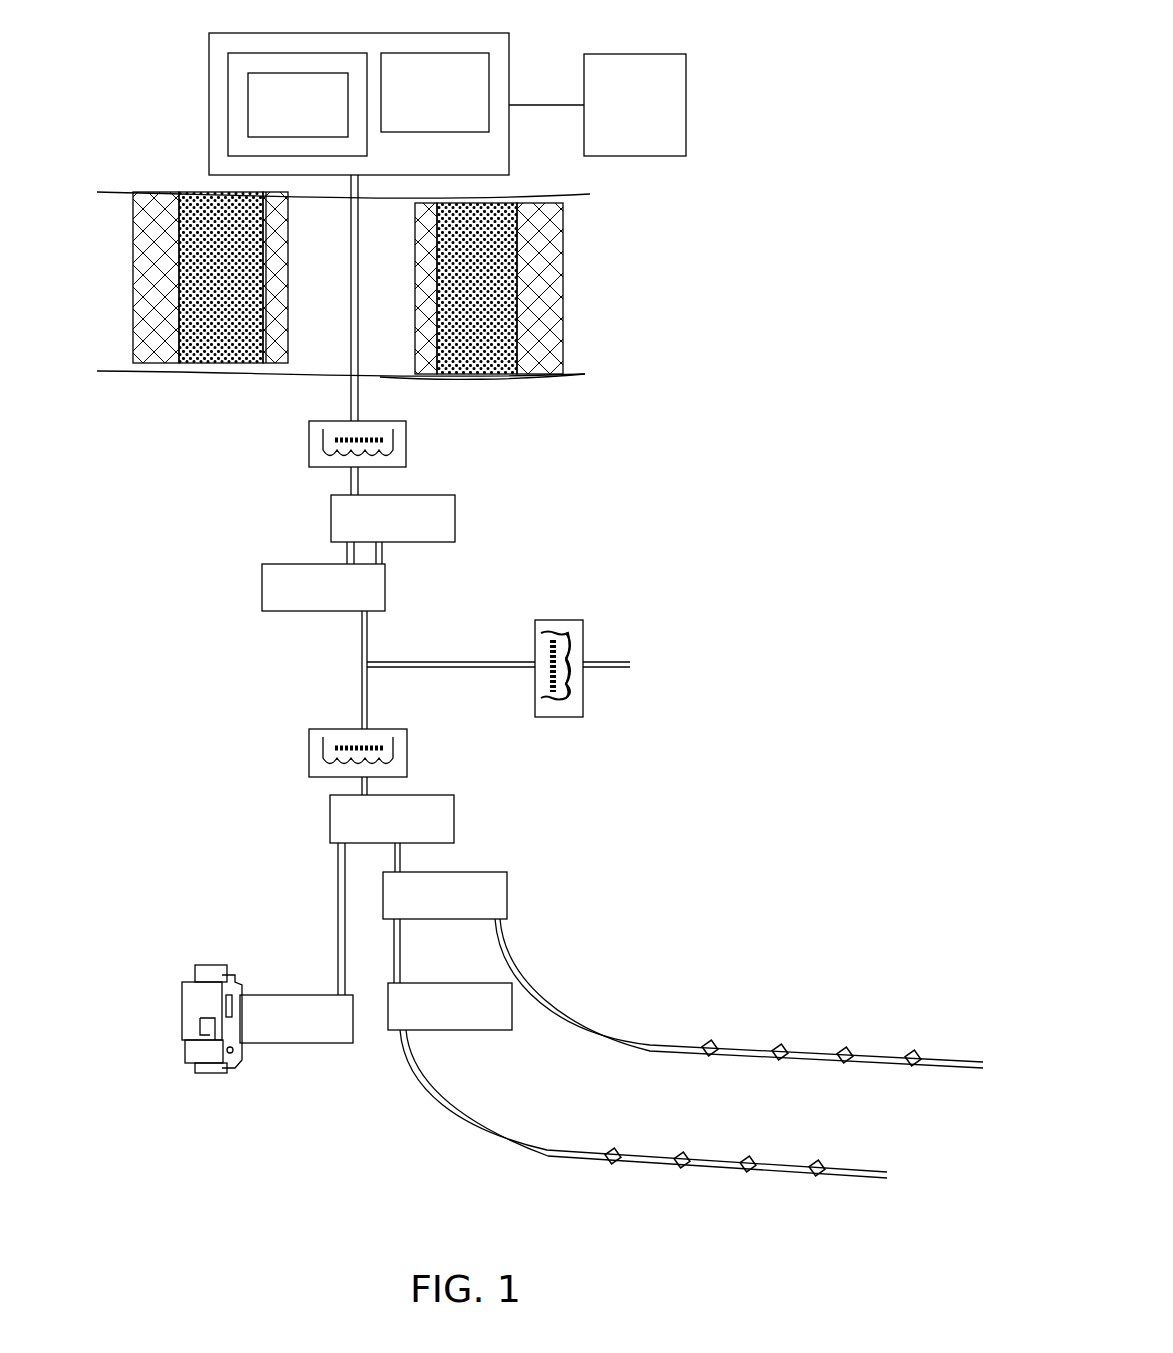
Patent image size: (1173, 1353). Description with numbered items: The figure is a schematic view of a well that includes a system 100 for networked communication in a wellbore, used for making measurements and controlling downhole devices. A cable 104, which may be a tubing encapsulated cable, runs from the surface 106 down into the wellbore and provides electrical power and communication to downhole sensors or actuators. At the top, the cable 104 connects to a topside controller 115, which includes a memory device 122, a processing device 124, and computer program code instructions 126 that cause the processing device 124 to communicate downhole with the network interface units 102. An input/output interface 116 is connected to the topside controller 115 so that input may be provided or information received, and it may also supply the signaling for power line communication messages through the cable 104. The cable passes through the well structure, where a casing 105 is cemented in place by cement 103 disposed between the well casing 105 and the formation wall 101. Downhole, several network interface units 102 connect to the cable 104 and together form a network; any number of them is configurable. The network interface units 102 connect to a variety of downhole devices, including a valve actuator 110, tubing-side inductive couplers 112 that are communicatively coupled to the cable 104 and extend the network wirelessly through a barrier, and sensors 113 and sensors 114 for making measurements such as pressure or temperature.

The system 100 is at (136, 1193).
The formation wall 101 is at (563, 272).
The network interface unit 102 is at (376, 769).
The cement 103 is at (478, 378).
The cable 104 is at (362, 628).
The casing 105 is at (270, 370).
The surface 106 is at (150, 193).
The valve actuator 110 is at (205, 963).
The inductive coupler 112 is at (309, 454).
The sensor 113 is at (675, 1155).
The sensor 114 is at (775, 1045).
The topside controller 115 is at (209, 62).
The input/output interface 116 is at (637, 55).
The memory device 122 is at (368, 134).
The processing device 124 is at (440, 52).
The computer program code instructions 126 is at (298, 105).